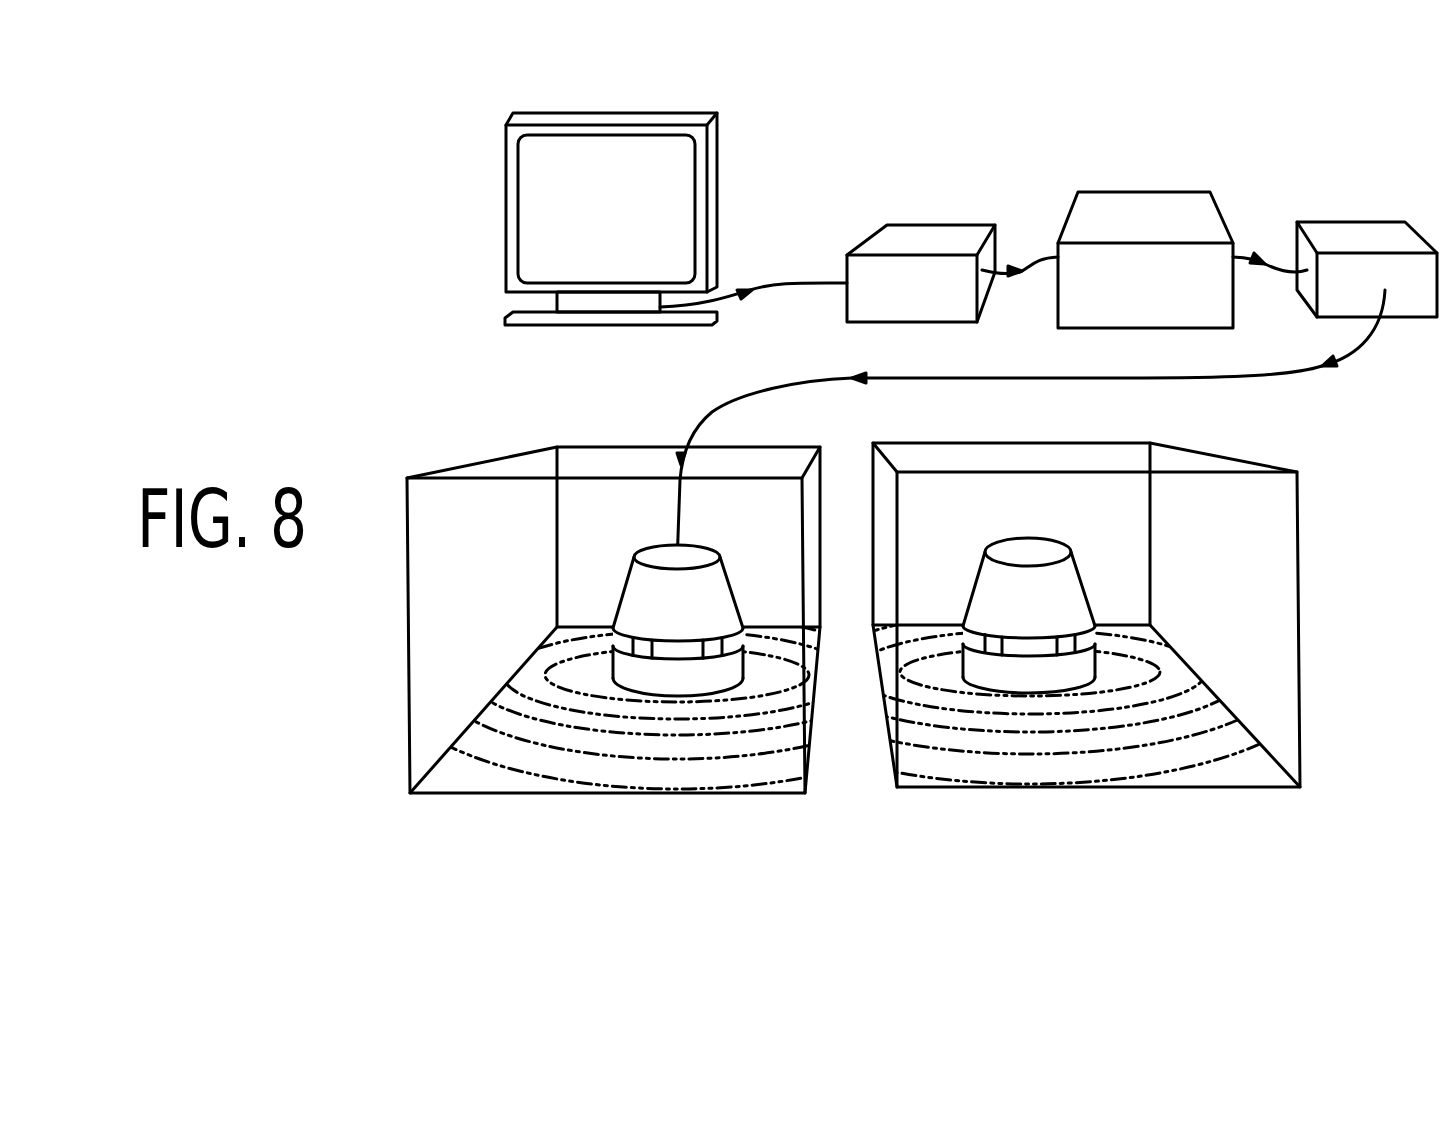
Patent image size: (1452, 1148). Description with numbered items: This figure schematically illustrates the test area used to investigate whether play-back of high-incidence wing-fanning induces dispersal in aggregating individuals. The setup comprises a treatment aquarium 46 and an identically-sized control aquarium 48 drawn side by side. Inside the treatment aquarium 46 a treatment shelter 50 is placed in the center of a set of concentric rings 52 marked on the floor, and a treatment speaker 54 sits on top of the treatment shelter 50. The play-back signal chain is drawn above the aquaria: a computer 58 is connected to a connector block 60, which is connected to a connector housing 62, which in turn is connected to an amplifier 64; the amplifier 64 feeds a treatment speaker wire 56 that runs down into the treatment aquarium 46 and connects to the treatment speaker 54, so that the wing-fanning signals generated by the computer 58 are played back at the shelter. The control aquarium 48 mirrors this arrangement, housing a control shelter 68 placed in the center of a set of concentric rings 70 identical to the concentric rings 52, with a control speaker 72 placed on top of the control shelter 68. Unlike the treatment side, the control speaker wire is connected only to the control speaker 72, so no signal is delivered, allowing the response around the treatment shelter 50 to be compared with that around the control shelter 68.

The treatment aquarium 46 is at (677, 616).
The control aquarium 48 is at (1032, 631).
The treatment shelter 50 is at (682, 677).
The concentric rings 52 is at (592, 680).
The treatment speaker 54 is at (645, 550).
The treatment speaker wire 56 is at (930, 373).
The computer 58 is at (505, 250).
The connector block 60 is at (937, 235).
The connector housing 62 is at (1137, 210).
The amplifier 64 is at (1352, 232).
The control shelter 68 is at (1083, 662).
The concentric rings 70 is at (1100, 707).
The control speaker 72 is at (1080, 536).